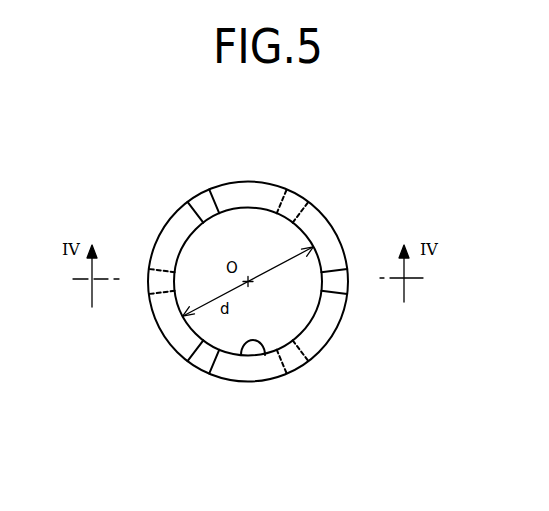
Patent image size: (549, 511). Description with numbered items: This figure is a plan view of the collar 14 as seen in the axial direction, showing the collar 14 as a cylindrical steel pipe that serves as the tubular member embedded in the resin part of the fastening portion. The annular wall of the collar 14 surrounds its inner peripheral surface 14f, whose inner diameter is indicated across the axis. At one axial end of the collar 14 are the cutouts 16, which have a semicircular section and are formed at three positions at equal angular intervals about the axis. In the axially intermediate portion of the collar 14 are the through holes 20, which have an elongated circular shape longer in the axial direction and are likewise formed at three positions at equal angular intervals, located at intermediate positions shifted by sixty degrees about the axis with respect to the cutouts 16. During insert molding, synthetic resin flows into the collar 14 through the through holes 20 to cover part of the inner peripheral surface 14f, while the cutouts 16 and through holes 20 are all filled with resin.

The collar 14 is at (343, 194).
The inner peripheral surface 14f is at (249, 340).
The cutouts 16 is at (203, 204).
The through holes 20 is at (300, 196).